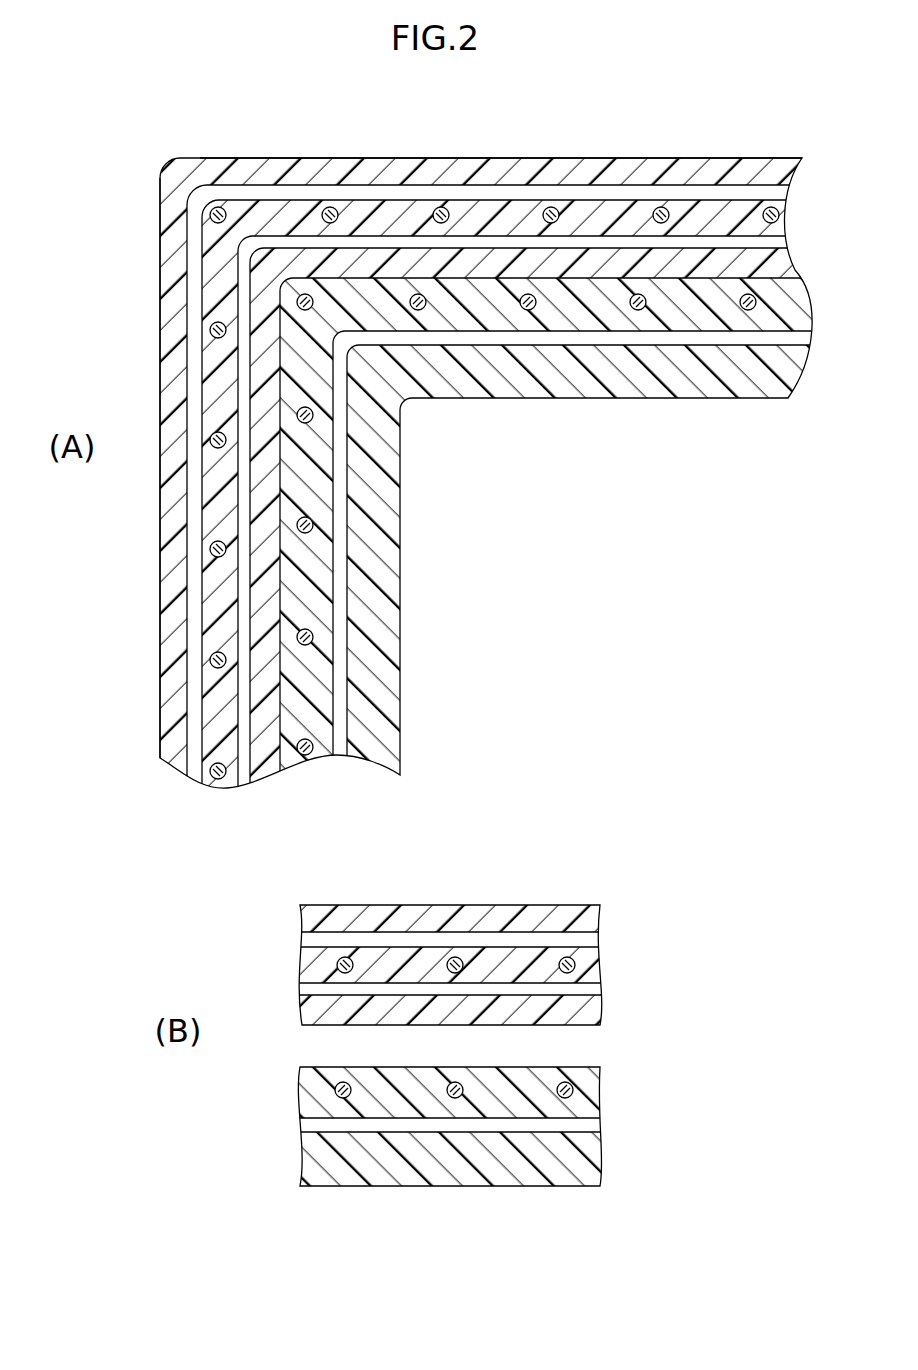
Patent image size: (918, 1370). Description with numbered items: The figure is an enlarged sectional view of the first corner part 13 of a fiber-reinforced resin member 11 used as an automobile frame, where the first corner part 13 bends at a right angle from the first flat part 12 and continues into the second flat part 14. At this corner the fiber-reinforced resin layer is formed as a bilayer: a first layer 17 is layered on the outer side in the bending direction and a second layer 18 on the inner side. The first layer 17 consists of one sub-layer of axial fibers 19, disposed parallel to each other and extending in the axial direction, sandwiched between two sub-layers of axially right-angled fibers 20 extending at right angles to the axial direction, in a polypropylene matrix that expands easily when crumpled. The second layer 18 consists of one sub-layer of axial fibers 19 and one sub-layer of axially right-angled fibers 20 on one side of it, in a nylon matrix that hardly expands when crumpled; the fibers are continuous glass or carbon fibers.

The fiber-reinforced resin member 11 is at (574, 126).
The first flat part 12 is at (666, 155).
The first corner part 13 is at (150, 182).
The second flat part 14 is at (156, 712).
The first layer 17 is at (441, 155).
The second layer 18 is at (518, 404).
The axial fibers 19 is at (327, 209).
The axially right-angled fibers 20 is at (400, 190).